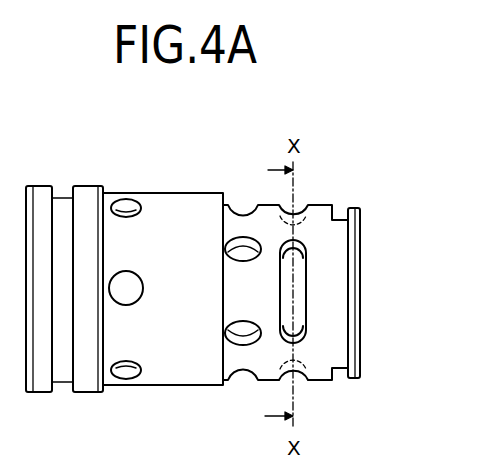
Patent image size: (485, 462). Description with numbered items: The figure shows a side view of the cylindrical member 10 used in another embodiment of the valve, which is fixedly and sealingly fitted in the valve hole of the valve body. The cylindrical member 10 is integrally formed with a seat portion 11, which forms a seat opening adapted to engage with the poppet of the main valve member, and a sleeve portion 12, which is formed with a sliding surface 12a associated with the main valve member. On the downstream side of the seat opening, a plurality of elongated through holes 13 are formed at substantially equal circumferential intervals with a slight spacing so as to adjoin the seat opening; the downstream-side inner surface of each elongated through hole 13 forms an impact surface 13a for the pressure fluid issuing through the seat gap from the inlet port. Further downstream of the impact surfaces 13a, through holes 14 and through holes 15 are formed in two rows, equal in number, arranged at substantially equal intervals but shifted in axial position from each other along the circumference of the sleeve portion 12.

The cylindrical member 10 is at (363, 202).
The seat portion 11 is at (320, 375).
The sleeve portion 12 is at (187, 373).
The sliding surface 12a is at (137, 385).
The elongated through hole 13 is at (298, 314).
The impact surface 13a is at (283, 280).
The through hole 14 is at (243, 248).
The through hole 15 is at (140, 288).